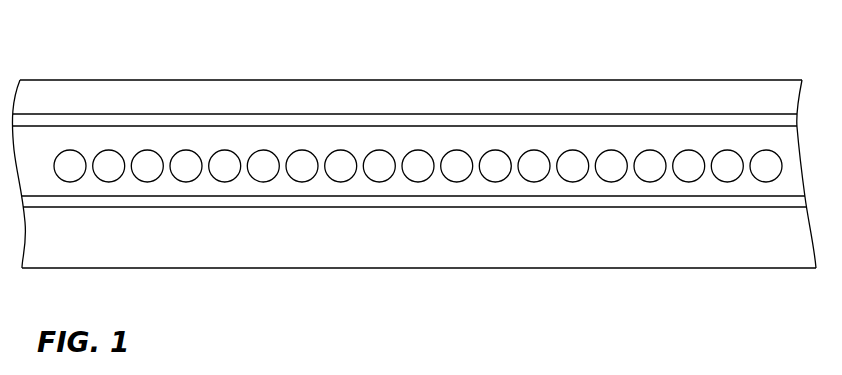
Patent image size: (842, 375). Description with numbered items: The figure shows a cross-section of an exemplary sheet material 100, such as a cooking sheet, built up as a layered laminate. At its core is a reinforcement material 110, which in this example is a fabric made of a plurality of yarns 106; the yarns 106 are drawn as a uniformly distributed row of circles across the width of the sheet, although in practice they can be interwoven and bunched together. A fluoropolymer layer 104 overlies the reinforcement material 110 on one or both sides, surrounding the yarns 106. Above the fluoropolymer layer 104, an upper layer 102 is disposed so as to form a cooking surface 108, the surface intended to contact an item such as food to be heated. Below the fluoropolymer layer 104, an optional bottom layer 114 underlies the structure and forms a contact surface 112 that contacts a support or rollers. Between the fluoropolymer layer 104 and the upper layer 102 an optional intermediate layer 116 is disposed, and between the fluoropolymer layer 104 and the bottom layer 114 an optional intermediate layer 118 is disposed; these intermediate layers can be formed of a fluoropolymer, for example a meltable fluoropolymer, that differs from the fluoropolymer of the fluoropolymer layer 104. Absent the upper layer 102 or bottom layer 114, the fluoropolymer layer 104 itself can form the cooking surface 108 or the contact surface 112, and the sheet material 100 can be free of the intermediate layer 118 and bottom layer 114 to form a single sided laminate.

The sheet material 100 is at (178, 43).
The upper layer 102 is at (432, 97).
The fluoropolymer layer 104 is at (475, 185).
The yarns 106 is at (72, 172).
The cooking surface 108 is at (543, 78).
The reinforcement material 110 is at (664, 133).
The contact surface 112 is at (561, 268).
The bottom layer 114 is at (634, 240).
The intermediate layer 116 is at (248, 122).
The intermediate layer 118 is at (707, 203).